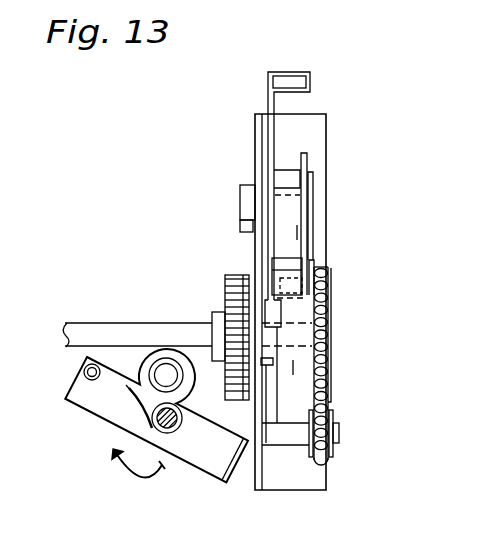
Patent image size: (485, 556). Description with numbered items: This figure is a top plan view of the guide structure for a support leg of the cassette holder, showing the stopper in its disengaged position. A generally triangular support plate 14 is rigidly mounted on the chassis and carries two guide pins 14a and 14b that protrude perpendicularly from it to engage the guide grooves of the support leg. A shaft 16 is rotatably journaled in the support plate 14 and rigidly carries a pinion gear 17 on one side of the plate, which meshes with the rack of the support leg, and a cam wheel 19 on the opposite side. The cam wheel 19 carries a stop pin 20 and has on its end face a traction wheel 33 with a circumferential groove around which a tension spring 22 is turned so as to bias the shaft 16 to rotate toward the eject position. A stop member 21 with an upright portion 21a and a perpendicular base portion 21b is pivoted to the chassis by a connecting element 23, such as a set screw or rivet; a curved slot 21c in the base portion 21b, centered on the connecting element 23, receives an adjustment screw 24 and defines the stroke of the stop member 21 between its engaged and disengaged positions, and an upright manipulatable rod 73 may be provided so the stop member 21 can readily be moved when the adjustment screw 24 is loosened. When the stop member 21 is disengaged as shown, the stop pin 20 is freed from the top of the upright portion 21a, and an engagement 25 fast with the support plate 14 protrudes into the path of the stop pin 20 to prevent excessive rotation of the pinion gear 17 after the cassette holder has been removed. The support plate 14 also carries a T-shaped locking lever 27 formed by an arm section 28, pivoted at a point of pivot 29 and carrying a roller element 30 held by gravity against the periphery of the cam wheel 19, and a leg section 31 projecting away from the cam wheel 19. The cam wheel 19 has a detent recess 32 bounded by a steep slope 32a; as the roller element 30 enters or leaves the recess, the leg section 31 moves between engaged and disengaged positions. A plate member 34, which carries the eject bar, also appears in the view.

The support plate 14 is at (255, 133).
The guide pin 14a is at (240, 187).
The guide pin 14b is at (240, 225).
The shaft 16 is at (90, 328).
The pinion gear 17 is at (228, 292).
The cam wheel 19 is at (293, 367).
The stop pin 20 is at (268, 300).
The stop member 21 is at (181, 456).
The upright portion 21a is at (232, 482).
The base portion 21b is at (97, 412).
The curved slot 21c is at (125, 430).
The tension spring 22 is at (330, 403).
The connecting element 23 is at (165, 373).
The adjustment screw 24 is at (131, 472).
The engagement 25 is at (265, 366).
The locking lever 27 is at (289, 209).
The arm section 28 is at (297, 233).
The point of pivot 29 is at (312, 177).
The roller element 30 is at (287, 259).
The leg section 31 is at (308, 110).
The detent recess 32 is at (291, 288).
The steep slope 32a is at (330, 283).
The traction wheel 33 is at (330, 327).
The plate member 34 is at (339, 438).
The upright manipulatable rod 73 is at (86, 371).